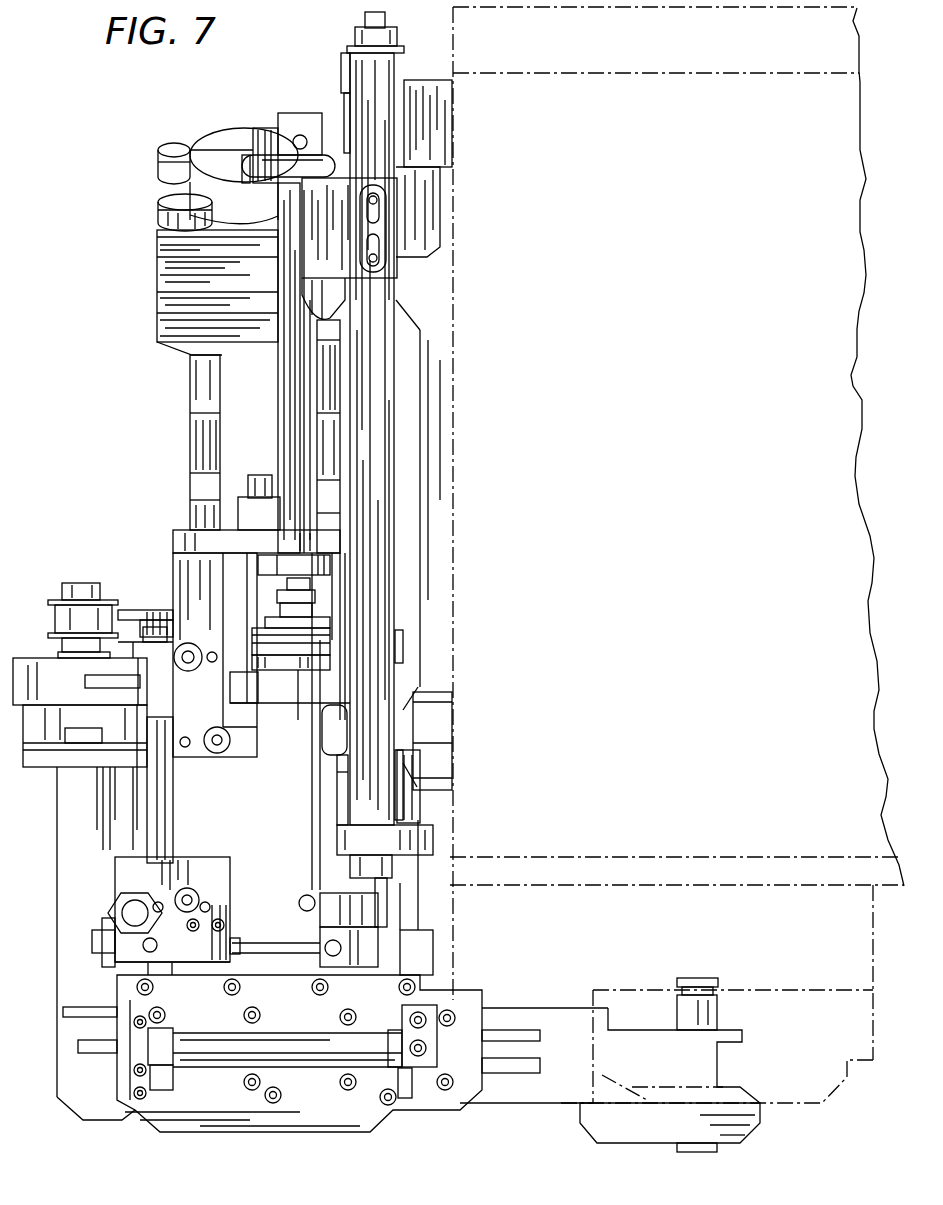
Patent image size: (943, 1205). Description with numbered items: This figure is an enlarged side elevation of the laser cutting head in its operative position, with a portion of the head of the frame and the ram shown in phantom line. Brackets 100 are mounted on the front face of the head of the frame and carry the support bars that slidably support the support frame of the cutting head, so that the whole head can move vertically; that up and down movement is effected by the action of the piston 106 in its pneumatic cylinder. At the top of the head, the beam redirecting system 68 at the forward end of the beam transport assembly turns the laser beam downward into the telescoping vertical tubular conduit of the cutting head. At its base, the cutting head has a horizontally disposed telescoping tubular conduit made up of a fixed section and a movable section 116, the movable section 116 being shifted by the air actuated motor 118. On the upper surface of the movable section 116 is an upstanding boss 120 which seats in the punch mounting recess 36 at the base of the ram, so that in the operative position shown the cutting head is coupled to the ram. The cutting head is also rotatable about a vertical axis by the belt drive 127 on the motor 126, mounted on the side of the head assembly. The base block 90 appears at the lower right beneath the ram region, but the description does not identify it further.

The punch mounting recess 36 is at (717, 1020).
The beam redirecting system 68 is at (185, 262).
The base block 90 is at (650, 1128).
The brackets 100 is at (413, 743).
The piston 106 is at (372, 540).
The movable section 116 is at (537, 1088).
The air actuated motor 118 is at (300, 1050).
The upstanding boss 120 is at (703, 1008).
The motor 126 is at (107, 683).
The belt drive 127 is at (90, 617).